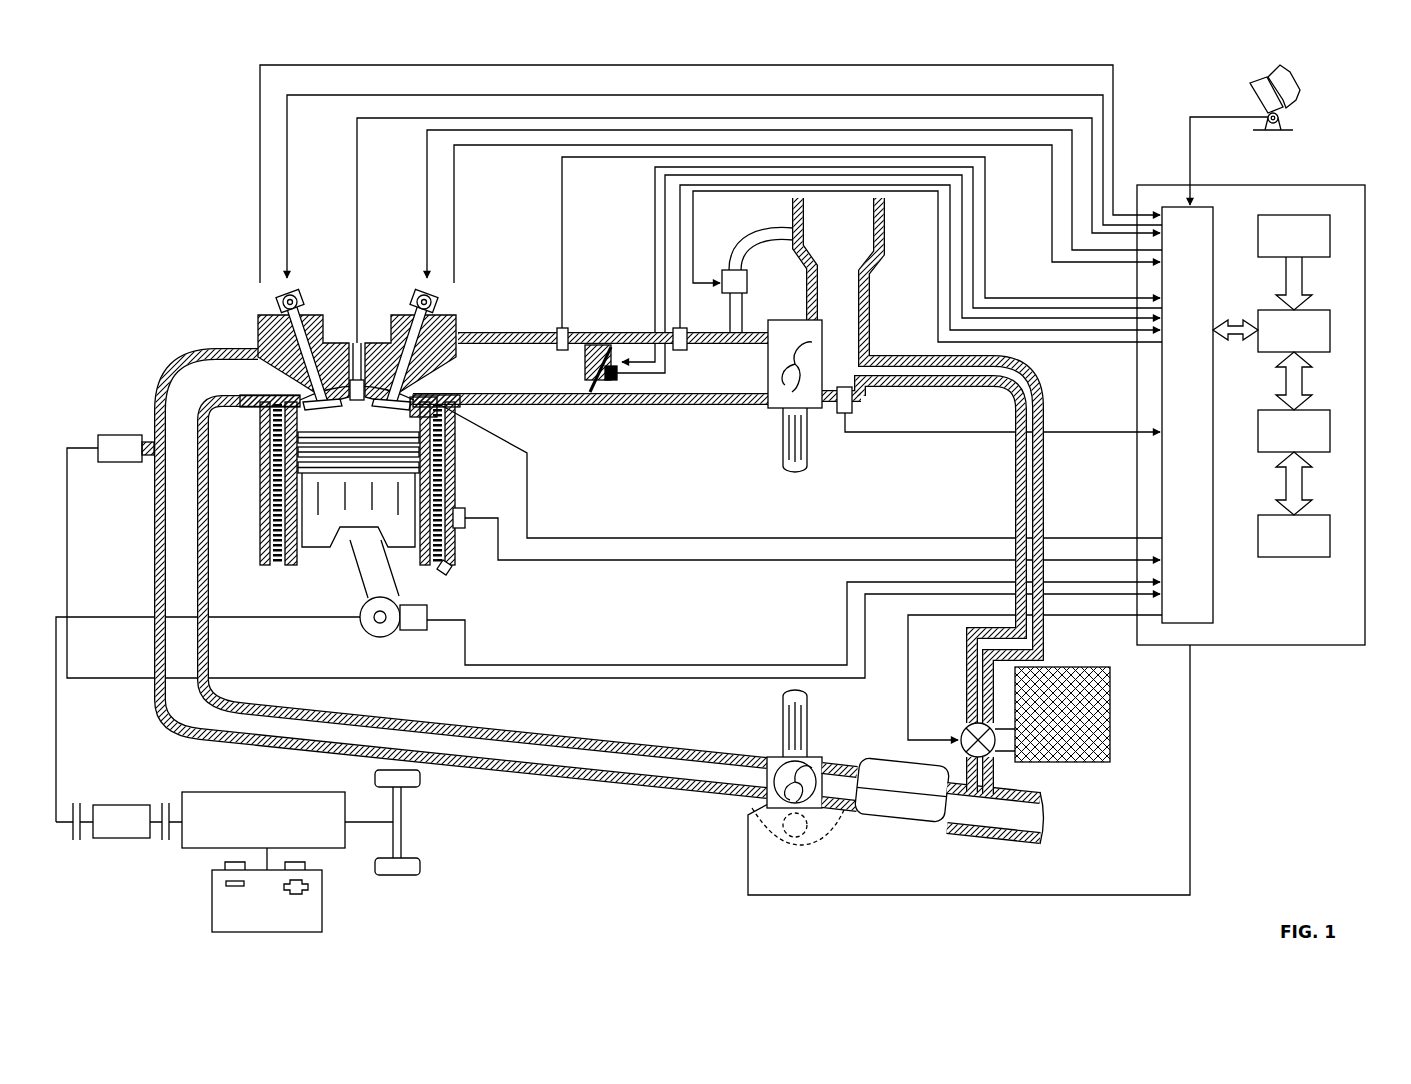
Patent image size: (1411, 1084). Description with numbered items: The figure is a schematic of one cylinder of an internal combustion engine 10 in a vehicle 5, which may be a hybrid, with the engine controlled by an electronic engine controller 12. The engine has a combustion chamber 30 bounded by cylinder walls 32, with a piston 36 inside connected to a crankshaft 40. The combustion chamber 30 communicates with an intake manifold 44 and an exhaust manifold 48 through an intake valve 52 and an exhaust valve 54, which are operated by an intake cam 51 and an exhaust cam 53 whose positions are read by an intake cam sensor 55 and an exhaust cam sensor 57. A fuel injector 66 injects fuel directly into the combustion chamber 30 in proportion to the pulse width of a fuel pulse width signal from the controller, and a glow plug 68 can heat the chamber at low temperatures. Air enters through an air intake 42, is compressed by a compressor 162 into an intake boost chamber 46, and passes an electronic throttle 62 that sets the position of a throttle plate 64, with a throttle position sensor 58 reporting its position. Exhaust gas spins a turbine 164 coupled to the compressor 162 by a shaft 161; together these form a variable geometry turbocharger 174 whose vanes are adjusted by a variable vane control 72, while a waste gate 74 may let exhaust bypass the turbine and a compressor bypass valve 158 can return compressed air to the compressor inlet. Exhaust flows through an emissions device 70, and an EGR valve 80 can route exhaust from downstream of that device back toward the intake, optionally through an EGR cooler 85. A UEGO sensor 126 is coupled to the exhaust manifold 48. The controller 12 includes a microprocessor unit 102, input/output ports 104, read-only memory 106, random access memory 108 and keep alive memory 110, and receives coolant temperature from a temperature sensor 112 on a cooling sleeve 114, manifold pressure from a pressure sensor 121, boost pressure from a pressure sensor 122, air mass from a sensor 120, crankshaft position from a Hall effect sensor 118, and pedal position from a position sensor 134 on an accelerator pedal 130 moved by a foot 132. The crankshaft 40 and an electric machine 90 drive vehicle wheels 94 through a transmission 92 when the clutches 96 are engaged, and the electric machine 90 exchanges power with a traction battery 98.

The vehicle 5 is at (163, 128).
The internal combustion engine 10 is at (190, 268).
The electronic engine controller 12 is at (1328, 185).
The combustion chamber 30 is at (355, 410).
The cylinder walls 32 is at (300, 563).
The piston 36 is at (347, 558).
The crankshaft 40 is at (370, 635).
The air intake 42 is at (918, 460).
The intake manifold 44 is at (590, 368).
The intake boost chamber 46 is at (690, 369).
The exhaust manifold 48 is at (463, 573).
The intake cam 51 is at (410, 290).
The intake valve 52 is at (400, 378).
The exhaust cam 53 is at (300, 290).
The exhaust valve 54 is at (316, 397).
The intake cam sensor 55 is at (442, 306).
The exhaust cam sensor 57 is at (283, 300).
The throttle position sensor 58 is at (619, 380).
The electronic throttle 62 is at (565, 330).
The throttle plate 64 is at (602, 340).
The fuel injector 66 is at (345, 345).
The glow plug 68 is at (476, 428).
The emissions device 70 is at (882, 820).
The variable vane control 72 is at (764, 797).
The waste gate 74 is at (799, 836).
The EGR valve 80 is at (964, 728).
The EGR cooler 85 is at (1110, 705).
The electric machine 90 is at (120, 840).
The transmission 92 is at (322, 848).
The vehicle wheels 94 is at (400, 876).
The clutch 96 is at (76, 840).
The traction battery 98 is at (212, 915).
The microprocessor unit 102 is at (1330, 330).
The input/output ports 104 is at (1215, 215).
The read-only memory 106 is at (1330, 235).
The random access memory 108 is at (1330, 430).
The keep alive memory 110 is at (1330, 535).
The temperature sensor 112 is at (466, 512).
The cooling sleeve 114 is at (452, 572).
The Hall effect sensor 118 is at (413, 630).
The air mass sensor 120 is at (852, 400).
The pressure sensor 121 is at (554, 332).
The pressure sensor 122 is at (687, 330).
The UEGO sensor 126 is at (98, 440).
The accelerator pedal 130 is at (1256, 98).
The foot 132 is at (1302, 86).
The position sensor 134 is at (1290, 124).
The compressor bypass valve 158 is at (722, 270).
The shaft 161 is at (785, 445).
The compressor 162 is at (768, 405).
The turbine 164 is at (770, 757).
The variable geometry turbocharger 174 is at (718, 500).